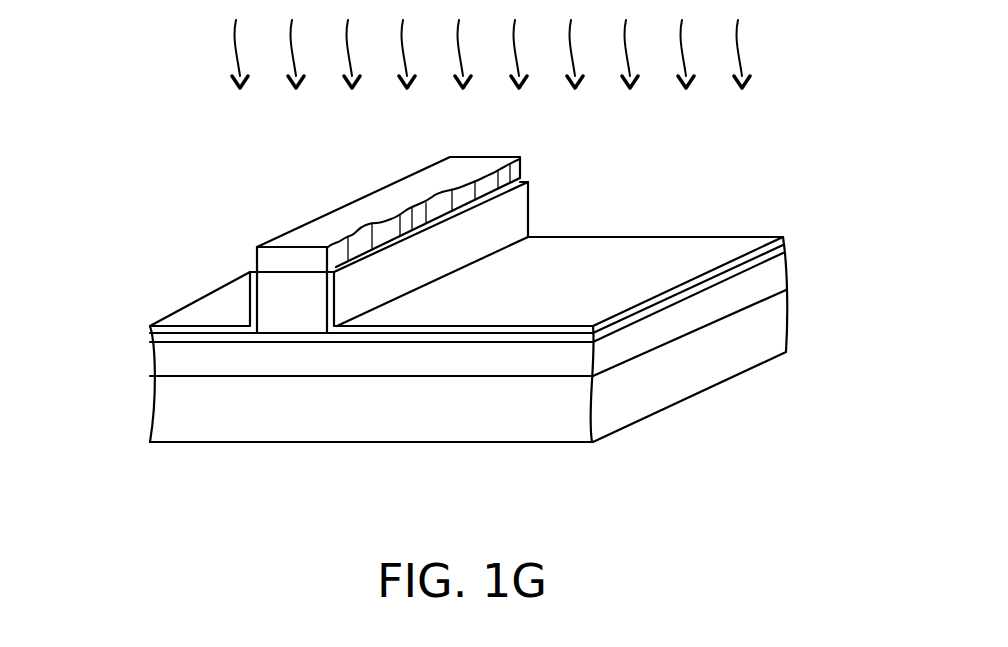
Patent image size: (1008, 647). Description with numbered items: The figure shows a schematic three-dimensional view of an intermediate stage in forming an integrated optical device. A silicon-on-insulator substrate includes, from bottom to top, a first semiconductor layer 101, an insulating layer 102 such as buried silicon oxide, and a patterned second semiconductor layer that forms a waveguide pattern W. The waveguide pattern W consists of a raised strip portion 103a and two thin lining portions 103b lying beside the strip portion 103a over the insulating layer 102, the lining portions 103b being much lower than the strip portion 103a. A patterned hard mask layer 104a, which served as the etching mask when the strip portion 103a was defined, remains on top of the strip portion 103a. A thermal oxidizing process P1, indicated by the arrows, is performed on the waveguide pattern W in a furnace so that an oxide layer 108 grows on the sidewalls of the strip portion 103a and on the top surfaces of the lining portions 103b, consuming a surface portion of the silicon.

The first semiconductor layer 101 is at (765, 333).
The insulating layer 102 is at (767, 283).
The strip portion 103a is at (270, 298).
The lining portions 103b is at (197, 338).
The patterned hard mask layer 104a is at (522, 172).
The oxide layer 108 is at (767, 250).
The oxidizing process P1 is at (740, 52).
The waveguide pattern W is at (96, 243).